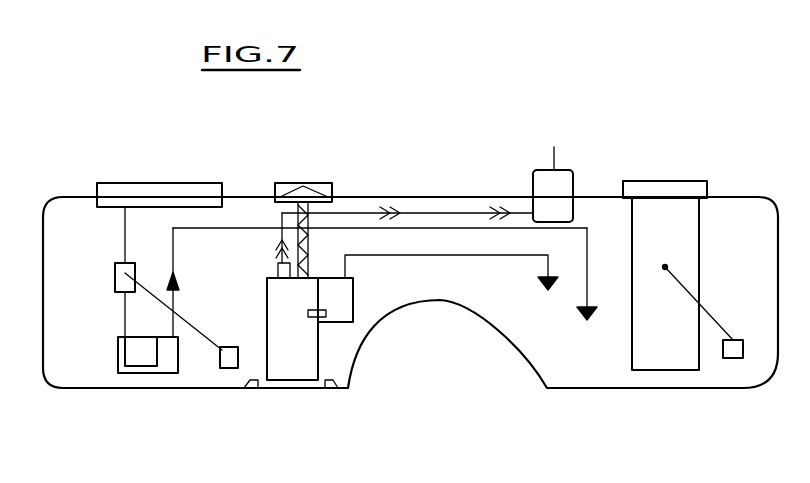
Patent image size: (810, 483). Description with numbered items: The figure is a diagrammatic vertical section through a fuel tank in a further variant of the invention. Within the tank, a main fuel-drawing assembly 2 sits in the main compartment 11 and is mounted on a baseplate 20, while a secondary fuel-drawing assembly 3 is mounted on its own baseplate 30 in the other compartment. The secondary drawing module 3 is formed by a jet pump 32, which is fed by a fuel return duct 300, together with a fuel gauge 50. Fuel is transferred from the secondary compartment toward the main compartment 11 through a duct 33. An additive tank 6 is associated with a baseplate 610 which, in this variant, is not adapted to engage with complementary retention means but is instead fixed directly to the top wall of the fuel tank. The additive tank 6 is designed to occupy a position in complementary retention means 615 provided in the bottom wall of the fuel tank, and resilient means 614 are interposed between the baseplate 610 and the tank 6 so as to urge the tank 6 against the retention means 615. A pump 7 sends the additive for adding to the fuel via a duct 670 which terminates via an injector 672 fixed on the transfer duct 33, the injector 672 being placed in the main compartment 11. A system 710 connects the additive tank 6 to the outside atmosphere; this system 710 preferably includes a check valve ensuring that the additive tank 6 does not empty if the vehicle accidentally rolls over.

The main fuel-drawing assembly 2 is at (645, 346).
The secondary fuel-drawing assembly 3 is at (110, 360).
The additive tank 6 is at (290, 350).
The pump 7 is at (348, 298).
The main compartment 11 is at (638, 388).
The baseplate 20 is at (690, 188).
The baseplate 30 is at (142, 187).
The jet pump 32 is at (145, 358).
The duct 33 is at (447, 228).
The fuel gauge 50 is at (225, 368).
The fuel return duct 300 is at (180, 175).
The baseplate 610 is at (292, 183).
The resilient means 614 is at (298, 265).
The complementary retention means 615 is at (334, 385).
The duct 670 is at (472, 252).
The injector 672 is at (548, 304).
The system for connecting the additive tank to the outside atmosphere 710 is at (552, 187).